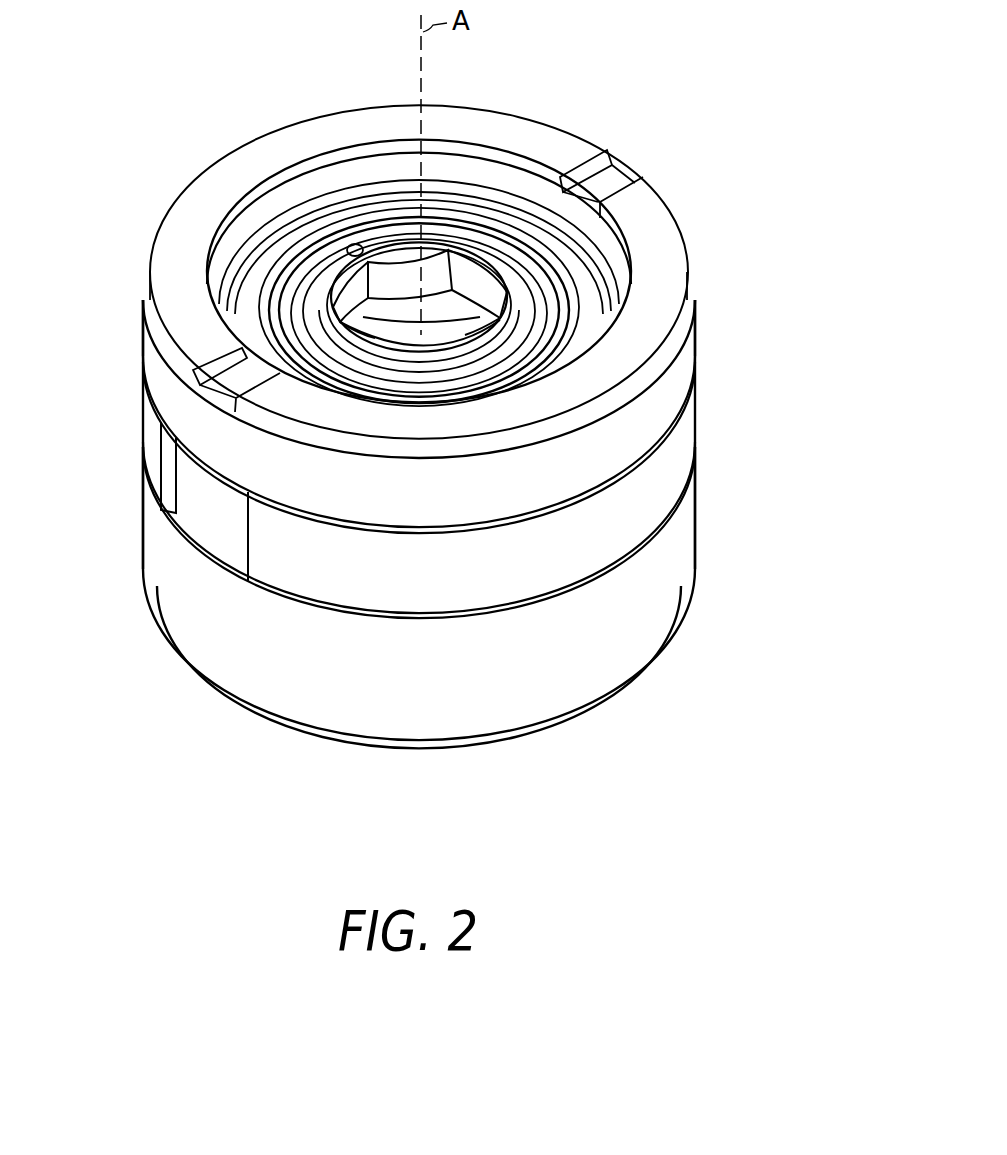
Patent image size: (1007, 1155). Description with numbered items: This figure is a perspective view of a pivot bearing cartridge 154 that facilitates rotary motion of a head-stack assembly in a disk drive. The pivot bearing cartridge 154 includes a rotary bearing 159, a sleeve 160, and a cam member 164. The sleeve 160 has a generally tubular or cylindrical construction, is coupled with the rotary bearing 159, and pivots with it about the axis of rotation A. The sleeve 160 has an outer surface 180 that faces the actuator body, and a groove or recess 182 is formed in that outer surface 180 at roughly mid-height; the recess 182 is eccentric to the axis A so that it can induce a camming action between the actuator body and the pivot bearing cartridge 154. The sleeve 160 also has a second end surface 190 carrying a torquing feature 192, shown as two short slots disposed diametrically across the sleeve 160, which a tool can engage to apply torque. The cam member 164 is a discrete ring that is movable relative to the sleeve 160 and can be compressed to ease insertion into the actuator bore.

The pivot bearing cartridge 154 is at (777, 247).
The rotary bearing 159 is at (456, 235).
The sleeve 160 is at (700, 303).
The cam member 164 is at (557, 563).
The outer surface 180 is at (697, 512).
The recess 182 is at (210, 513).
The second end surface 190 is at (310, 128).
The torquing feature 192 is at (217, 382).